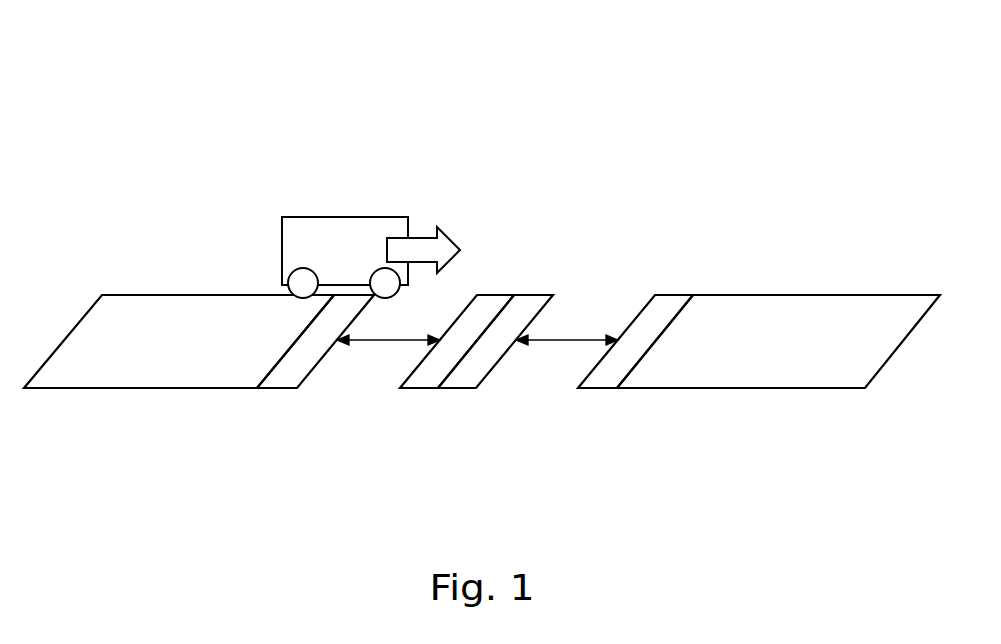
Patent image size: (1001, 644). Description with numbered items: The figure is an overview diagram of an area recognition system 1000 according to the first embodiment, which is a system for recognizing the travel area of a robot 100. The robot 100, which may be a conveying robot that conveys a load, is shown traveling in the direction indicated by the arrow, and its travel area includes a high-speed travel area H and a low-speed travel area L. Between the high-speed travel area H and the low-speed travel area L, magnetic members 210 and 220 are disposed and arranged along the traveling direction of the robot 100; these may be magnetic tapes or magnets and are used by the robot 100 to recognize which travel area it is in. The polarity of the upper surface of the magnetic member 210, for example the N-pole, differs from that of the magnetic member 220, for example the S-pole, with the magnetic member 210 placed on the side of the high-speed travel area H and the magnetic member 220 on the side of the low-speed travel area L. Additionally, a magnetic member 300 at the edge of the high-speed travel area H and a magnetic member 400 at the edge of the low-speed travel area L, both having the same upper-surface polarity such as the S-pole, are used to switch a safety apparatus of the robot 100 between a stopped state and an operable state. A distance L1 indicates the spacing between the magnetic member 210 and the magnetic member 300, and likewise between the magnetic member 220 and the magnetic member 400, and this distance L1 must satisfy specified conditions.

The area recognition system 1000 is at (92, 48).
The robot 100 is at (352, 217).
The magnetic member 210 is at (425, 388).
The magnetic member 220 is at (465, 388).
The magnetic member 300 is at (283, 388).
The magnetic member 400 is at (602, 388).
The high-speed travel area H is at (127, 295).
The low-speed travel area L is at (832, 295).
The distance L1 is at (477, 359).